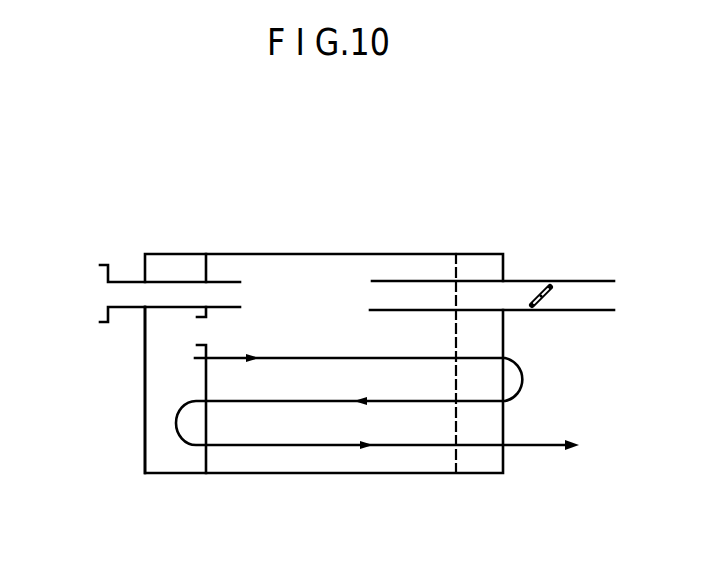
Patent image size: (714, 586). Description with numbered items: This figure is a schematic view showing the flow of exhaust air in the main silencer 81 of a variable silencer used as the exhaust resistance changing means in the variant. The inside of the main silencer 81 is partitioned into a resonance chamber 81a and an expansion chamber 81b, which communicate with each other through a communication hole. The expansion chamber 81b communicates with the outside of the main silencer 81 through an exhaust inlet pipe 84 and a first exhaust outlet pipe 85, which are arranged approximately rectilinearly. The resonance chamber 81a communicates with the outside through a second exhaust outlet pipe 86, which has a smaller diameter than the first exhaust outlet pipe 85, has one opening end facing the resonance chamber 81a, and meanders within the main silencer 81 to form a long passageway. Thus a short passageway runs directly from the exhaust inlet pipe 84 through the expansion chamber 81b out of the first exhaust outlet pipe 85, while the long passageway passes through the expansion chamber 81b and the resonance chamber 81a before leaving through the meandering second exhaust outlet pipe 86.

The main silencer 81 is at (391, 236).
The resonance chamber 81a is at (155, 363).
The expansion chamber 81b is at (277, 290).
The exhaust inlet pipe 84 is at (133, 282).
The first exhaust outlet pipe 85 is at (590, 280).
The second exhaust outlet pipe 86 is at (548, 447).